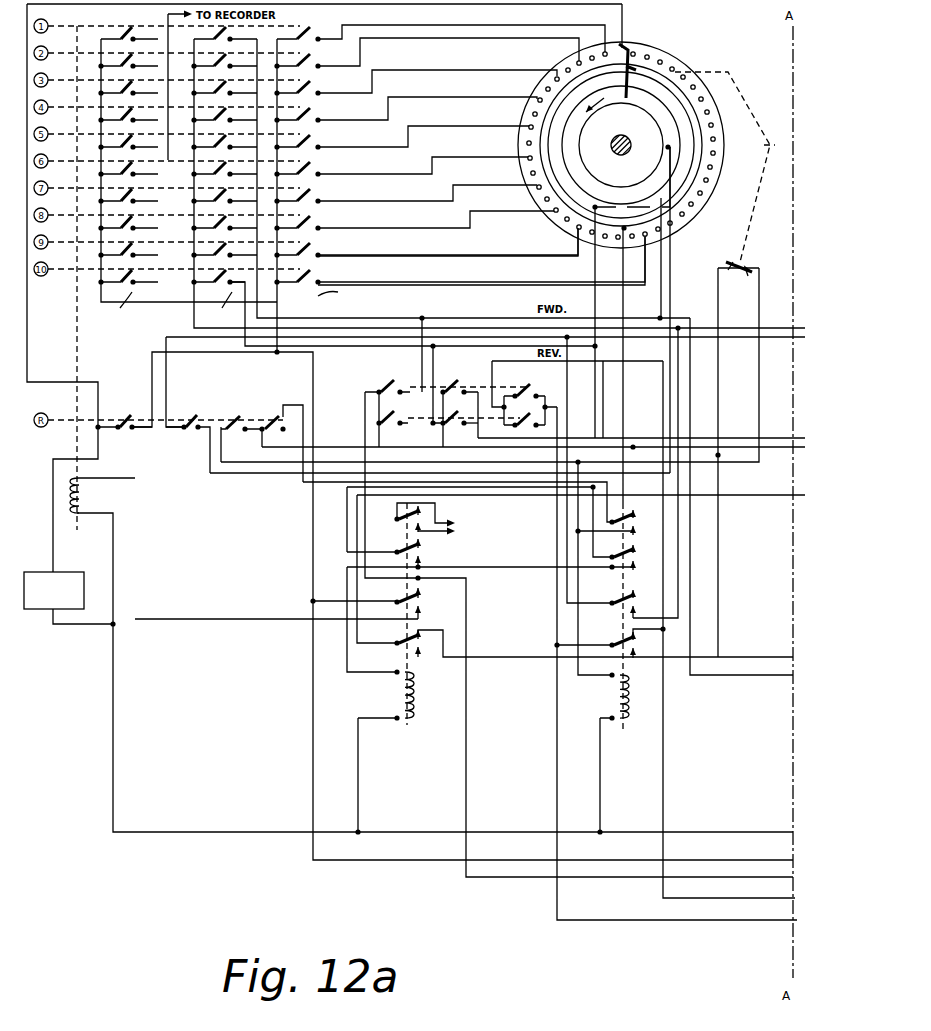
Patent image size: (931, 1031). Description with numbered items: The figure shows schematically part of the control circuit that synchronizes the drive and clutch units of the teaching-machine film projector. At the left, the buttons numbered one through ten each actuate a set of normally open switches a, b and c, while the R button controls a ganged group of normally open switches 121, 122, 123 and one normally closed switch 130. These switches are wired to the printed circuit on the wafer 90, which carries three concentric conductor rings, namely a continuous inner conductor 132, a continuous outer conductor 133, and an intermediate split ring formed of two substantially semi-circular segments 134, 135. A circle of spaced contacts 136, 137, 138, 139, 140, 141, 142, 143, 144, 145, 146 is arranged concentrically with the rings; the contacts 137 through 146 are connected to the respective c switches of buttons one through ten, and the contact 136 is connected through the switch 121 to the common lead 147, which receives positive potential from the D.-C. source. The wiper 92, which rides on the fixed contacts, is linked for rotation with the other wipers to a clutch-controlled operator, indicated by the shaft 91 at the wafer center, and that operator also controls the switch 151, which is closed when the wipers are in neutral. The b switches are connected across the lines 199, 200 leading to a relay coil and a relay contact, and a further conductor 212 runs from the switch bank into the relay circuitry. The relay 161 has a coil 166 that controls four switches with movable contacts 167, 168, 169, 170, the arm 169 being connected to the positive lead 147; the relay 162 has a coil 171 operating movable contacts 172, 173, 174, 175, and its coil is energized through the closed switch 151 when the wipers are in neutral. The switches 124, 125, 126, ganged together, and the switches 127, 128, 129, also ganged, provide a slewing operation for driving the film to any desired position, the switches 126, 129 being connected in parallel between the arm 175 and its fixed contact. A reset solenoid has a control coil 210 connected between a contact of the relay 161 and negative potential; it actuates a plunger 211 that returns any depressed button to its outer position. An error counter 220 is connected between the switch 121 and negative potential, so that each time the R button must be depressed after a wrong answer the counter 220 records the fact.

The wafer 90 is at (710, 173).
The shaft 91 is at (623, 136).
The wiper 92 is at (632, 48).
The switch 121 is at (126, 418).
The switch 122 is at (188, 433).
The switch 123 is at (244, 434).
The switch 124 is at (402, 388).
The switch 125 is at (472, 388).
The switch 126 is at (528, 390).
The switch 127 is at (396, 424).
The switch 128 is at (452, 428).
The switch 129 is at (516, 424).
The normally closed switch 130 is at (284, 432).
The inner conductor ring 132 is at (640, 152).
The outer conductor ring 133 is at (712, 125).
The segment 134 is at (597, 207).
The segment 135 is at (669, 162).
The contact 136 is at (618, 44).
The contact 137 is at (603, 50).
The contact 138 is at (576, 60).
The contact 139 is at (553, 78).
The contact 140 is at (537, 100).
The contact 141 is at (528, 127).
The contact 142 is at (526, 153).
The contact 143 is at (536, 187).
The contact 144 is at (553, 211).
The contact 145 is at (578, 230).
The contact 146 is at (650, 235).
The common lead 147 is at (286, 320).
The switch 151 is at (740, 266).
The relay 161 is at (434, 628).
The relay 162 is at (618, 627).
The coil 166 is at (400, 698).
The movable contact 167 is at (400, 527).
The movable contact 168 is at (430, 553).
The contact arm 169 is at (400, 604).
The movable contact 170 is at (396, 642).
The relay coil 171 is at (610, 692).
The movable contact 172 is at (627, 518).
The movable contact 173 is at (622, 554).
The movable contact 174 is at (618, 600).
The arm 175 is at (618, 640).
The line 199 is at (186, 310).
The line 200 is at (390, 318).
The control coil 210 is at (82, 506).
The plunger 211 is at (77, 350).
The conductor 212 is at (162, 338).
The error counter 220 is at (46, 612).